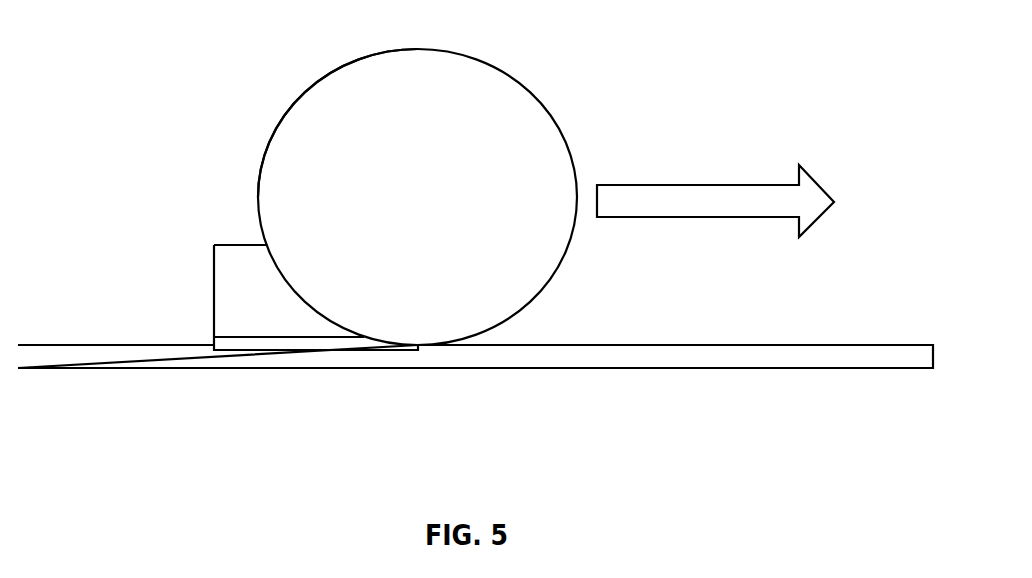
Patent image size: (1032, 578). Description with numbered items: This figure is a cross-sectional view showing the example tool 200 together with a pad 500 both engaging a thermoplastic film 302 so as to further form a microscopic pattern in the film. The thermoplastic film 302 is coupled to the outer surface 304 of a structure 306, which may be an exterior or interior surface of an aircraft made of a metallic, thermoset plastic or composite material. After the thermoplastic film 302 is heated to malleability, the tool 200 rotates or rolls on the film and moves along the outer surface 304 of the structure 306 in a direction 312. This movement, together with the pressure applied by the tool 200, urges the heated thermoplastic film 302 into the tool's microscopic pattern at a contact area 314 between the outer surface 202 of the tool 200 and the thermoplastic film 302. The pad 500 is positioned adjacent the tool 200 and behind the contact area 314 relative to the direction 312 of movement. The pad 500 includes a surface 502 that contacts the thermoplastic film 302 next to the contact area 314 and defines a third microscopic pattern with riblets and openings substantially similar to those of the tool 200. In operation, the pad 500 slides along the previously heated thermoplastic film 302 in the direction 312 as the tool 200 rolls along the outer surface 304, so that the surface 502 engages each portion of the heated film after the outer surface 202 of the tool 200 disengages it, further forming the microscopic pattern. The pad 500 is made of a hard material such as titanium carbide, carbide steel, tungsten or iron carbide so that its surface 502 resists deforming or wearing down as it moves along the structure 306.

The tool 200 is at (433, 68).
The outer surface 202 is at (514, 78).
The thermoplastic film 302 is at (238, 350).
The outer surface 304 is at (592, 344).
The structure 306 is at (627, 358).
The direction 312 is at (713, 185).
The contact area 314 is at (413, 345).
The pad 500 is at (214, 242).
The surface 502 is at (263, 335).